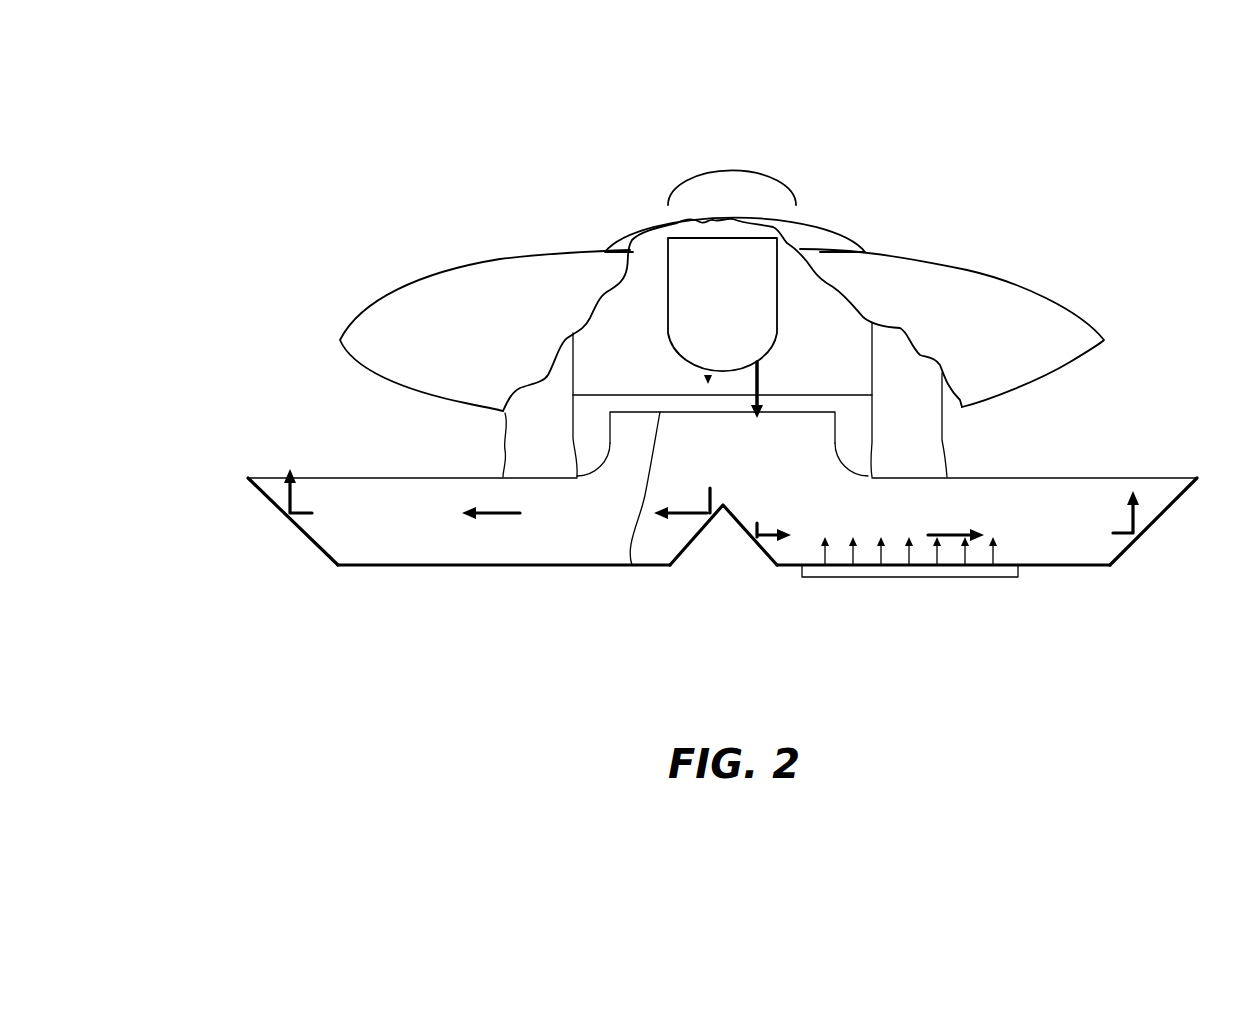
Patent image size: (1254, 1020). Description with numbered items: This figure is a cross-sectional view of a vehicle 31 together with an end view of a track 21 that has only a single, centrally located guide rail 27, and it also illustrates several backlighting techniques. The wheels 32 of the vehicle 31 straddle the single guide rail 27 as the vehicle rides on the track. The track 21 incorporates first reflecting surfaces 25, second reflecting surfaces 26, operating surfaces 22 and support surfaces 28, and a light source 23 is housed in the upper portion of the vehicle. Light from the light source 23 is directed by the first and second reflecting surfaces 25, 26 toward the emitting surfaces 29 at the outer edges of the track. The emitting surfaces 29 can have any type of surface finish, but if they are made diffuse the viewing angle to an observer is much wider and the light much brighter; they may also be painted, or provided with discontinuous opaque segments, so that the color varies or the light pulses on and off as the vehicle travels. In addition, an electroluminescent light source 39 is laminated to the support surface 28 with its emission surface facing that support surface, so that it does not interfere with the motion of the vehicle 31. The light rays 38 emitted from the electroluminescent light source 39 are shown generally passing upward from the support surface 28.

The track 21 is at (268, 630).
The operating surfaces 22 is at (368, 477).
The light source 23 is at (763, 282).
The first reflecting surfaces 25 is at (750, 535).
The second reflecting surfaces 26 is at (300, 530).
The single guide rail 27 is at (632, 565).
The support surfaces 28 is at (383, 565).
The emitting surfaces 29 is at (268, 477).
The vehicle 31 is at (1122, 254).
The wheels 32 is at (500, 430).
The light rays 38 is at (918, 519).
The electroluminescent light source 39 is at (957, 577).